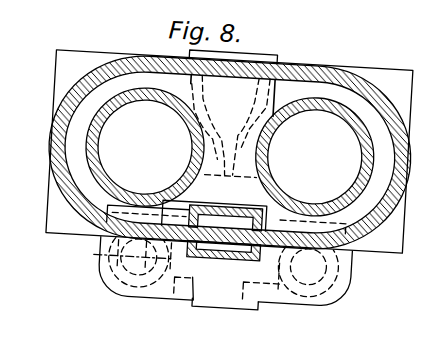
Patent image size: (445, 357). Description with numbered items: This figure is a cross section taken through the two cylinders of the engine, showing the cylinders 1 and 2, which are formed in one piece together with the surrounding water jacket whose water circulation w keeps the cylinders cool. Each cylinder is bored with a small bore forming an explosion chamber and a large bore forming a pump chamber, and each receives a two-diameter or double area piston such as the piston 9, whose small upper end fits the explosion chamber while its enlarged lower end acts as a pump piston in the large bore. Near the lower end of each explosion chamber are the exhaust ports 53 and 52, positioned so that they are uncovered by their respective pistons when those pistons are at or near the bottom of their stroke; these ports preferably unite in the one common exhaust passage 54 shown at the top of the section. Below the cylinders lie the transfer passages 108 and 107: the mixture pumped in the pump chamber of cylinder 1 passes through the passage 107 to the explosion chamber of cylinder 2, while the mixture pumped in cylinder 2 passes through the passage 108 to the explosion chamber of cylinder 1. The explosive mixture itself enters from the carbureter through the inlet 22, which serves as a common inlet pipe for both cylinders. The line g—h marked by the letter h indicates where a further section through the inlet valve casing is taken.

The cylinder 1 is at (401, 118).
The cylinder 2 is at (60, 113).
The common exhaust passage 54 is at (247, 39).
The exhaust port 53 is at (191, 153).
The exhaust port 52 is at (275, 149).
The water circulation w is at (230, 86).
The transfer passage 108 is at (246, 203).
The transfer passage 107 is at (251, 261).
The double area piston 9 is at (100, 264).
The section line g— h is at (285, 262).
The explosive mixture inlet 22 is at (224, 318).